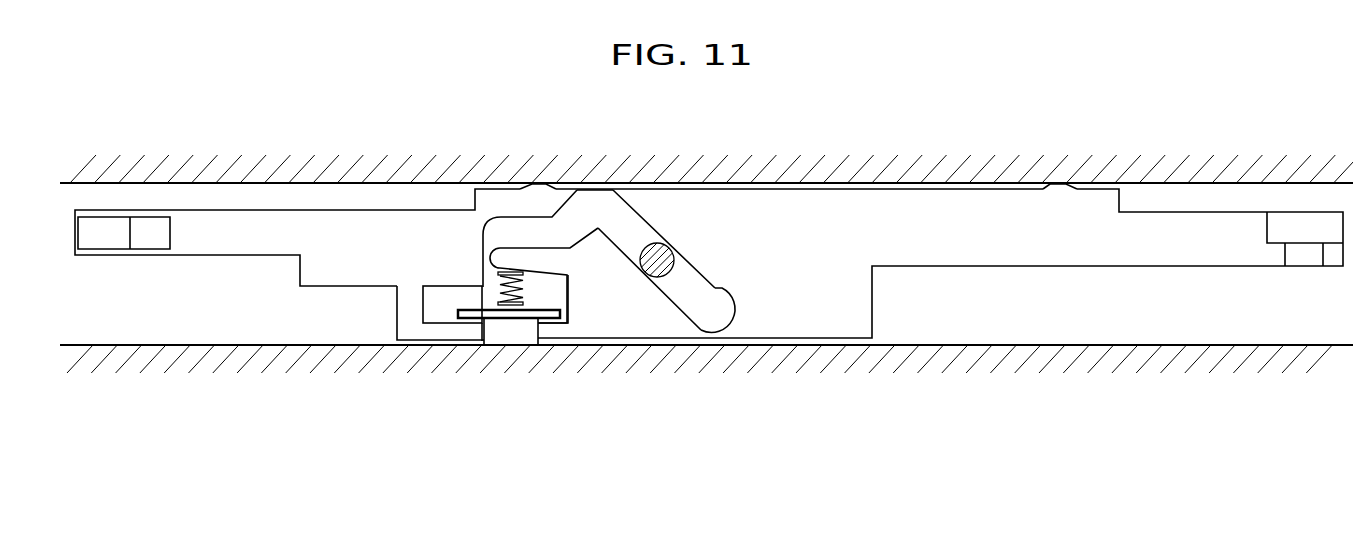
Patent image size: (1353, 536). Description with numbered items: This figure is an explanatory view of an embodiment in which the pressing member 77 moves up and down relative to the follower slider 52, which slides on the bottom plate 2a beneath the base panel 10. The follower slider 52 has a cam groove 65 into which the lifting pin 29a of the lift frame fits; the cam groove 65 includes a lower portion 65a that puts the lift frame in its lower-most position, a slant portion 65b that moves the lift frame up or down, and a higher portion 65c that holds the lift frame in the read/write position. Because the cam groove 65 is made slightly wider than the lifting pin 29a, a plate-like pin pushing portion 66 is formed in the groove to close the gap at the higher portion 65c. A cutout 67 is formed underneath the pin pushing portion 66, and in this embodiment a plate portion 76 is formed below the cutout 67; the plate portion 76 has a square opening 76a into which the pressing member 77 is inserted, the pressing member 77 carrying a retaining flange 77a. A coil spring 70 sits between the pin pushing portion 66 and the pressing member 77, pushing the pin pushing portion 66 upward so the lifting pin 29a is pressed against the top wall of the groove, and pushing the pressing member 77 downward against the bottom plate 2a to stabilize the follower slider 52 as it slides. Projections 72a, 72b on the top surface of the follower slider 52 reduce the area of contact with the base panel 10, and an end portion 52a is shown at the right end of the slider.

The base panel 10 is at (197, 173).
The bottom plate 2a is at (998, 350).
The follower slider 52 is at (940, 263).
The connector 52a is at (1305, 258).
The cam groove 65 is at (620, 220).
The lower portion 65a is at (737, 310).
The slant portion 65b is at (688, 277).
The higher portion 65c is at (509, 237).
The pin pushing portion 66 is at (512, 262).
The coil spring 70 is at (497, 272).
The lifting pin 29a is at (687, 250).
The retaining flange 77a is at (551, 310).
The pressing member 77 is at (513, 322).
The plate portion 76 is at (472, 324).
The square opening 76a is at (536, 325).
The cutout 67 is at (443, 300).
The projection 72a is at (1063, 183).
The projection 72b is at (538, 185).